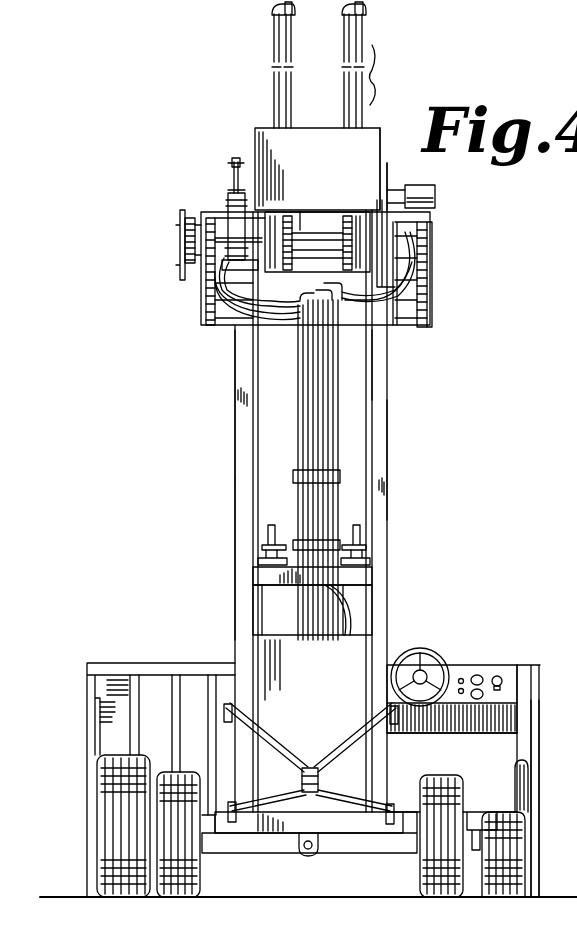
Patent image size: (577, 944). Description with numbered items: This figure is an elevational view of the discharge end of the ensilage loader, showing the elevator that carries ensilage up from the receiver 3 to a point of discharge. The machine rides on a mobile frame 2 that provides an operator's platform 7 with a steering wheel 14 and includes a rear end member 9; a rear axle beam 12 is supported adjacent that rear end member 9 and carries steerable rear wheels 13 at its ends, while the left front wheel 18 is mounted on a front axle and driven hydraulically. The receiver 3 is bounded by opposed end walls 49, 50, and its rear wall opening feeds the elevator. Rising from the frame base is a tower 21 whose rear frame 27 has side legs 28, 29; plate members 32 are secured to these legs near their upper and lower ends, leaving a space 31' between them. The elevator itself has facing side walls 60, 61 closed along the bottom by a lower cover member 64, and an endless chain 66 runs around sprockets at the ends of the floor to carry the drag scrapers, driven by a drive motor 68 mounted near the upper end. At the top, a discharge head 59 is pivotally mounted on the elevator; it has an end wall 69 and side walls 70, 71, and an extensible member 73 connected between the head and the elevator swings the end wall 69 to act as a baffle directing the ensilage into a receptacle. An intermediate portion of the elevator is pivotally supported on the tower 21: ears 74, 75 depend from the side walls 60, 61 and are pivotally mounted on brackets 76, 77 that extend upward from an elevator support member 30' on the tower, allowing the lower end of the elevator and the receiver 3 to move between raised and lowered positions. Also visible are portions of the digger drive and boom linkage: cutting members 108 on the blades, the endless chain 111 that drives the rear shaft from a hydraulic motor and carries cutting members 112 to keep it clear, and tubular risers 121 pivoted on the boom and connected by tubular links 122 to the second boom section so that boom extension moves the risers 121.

The mobile frame 2 is at (398, 391).
The receiver 3 is at (543, 659).
The operator's platform 7 is at (488, 810).
The rear end member 9 is at (255, 835).
The rear axle beam 12 is at (342, 848).
The rear wheels 13 is at (165, 770).
The steering wheel 14 is at (436, 656).
The left front wheel 18 is at (97, 777).
The tower 21 is at (227, 411).
The rear frame 27 is at (397, 488).
The side leg 28 is at (234, 453).
The side leg 29 is at (389, 447).
The elevator support member 30' is at (342, 601).
The space 31' is at (401, 365).
The plate members 32 is at (427, 272).
The end wall 49 is at (540, 788).
The end wall 50 is at (87, 828).
The discharge head 59 is at (388, 157).
The side wall 60 is at (363, 250).
The side wall 61 is at (291, 230).
The lower cover member 64 is at (326, 312).
The endless chain 66 is at (333, 214).
The drive motor 68 is at (435, 190).
The end wall 69 is at (320, 130).
The side wall 70 is at (370, 240).
The side wall 71 is at (278, 225).
The extensible member 73 is at (226, 206).
The ear 74 is at (362, 532).
The ear 75 is at (266, 527).
The bracket 76 is at (366, 557).
The bracket 77 is at (257, 557).
The cutting member 108 is at (212, 330).
The endless chain 111 is at (184, 245).
The cutting members 112 is at (180, 214).
The tubular risers 121 is at (273, 91).
The tubular links 122 is at (344, 47).